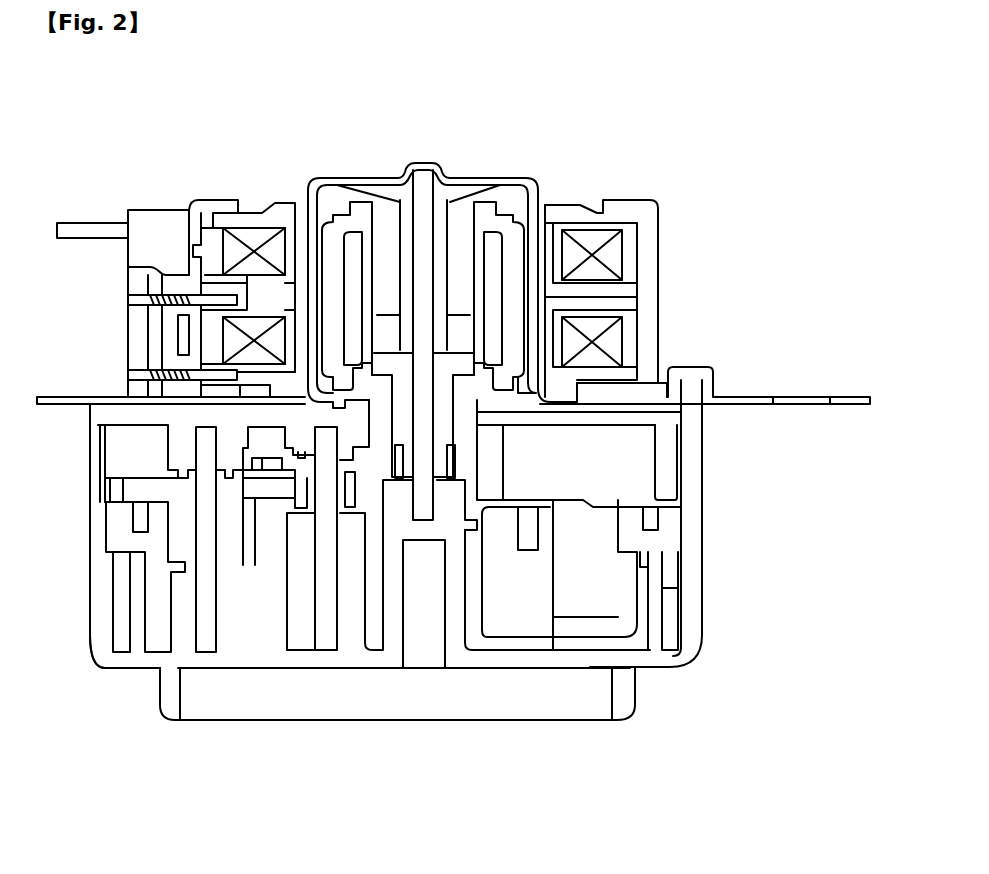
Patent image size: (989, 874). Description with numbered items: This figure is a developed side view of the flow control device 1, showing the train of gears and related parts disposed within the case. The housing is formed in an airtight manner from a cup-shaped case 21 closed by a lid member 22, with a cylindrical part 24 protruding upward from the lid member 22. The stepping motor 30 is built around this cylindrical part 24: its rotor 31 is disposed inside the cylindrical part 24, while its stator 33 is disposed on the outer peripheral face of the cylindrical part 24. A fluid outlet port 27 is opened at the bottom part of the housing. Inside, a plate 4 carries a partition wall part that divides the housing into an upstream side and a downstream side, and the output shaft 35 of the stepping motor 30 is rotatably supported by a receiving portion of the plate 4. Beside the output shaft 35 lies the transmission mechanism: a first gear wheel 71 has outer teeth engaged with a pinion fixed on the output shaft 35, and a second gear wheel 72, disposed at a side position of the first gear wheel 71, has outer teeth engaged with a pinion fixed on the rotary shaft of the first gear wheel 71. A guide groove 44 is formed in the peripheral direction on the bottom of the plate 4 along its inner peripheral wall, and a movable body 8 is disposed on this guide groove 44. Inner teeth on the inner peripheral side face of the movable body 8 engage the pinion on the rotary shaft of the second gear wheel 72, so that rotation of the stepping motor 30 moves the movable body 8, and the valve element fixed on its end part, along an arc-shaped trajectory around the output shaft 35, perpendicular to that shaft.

The flow control device 1 is at (808, 277).
The plate 4 is at (247, 660).
The movable body 8 is at (121, 533).
The cup-shaped case 21 is at (693, 578).
The lid member 22 is at (745, 398).
The cylindrical part 24 is at (453, 178).
The fluid outlet port 27 is at (525, 695).
The stepping motor 30 is at (305, 180).
The rotor 31 is at (505, 253).
The stator 33 is at (647, 293).
The output shaft 35 is at (417, 503).
The guide groove 44 is at (118, 603).
The first gear wheel 71 is at (283, 467).
The second gear wheel 72 is at (188, 545).